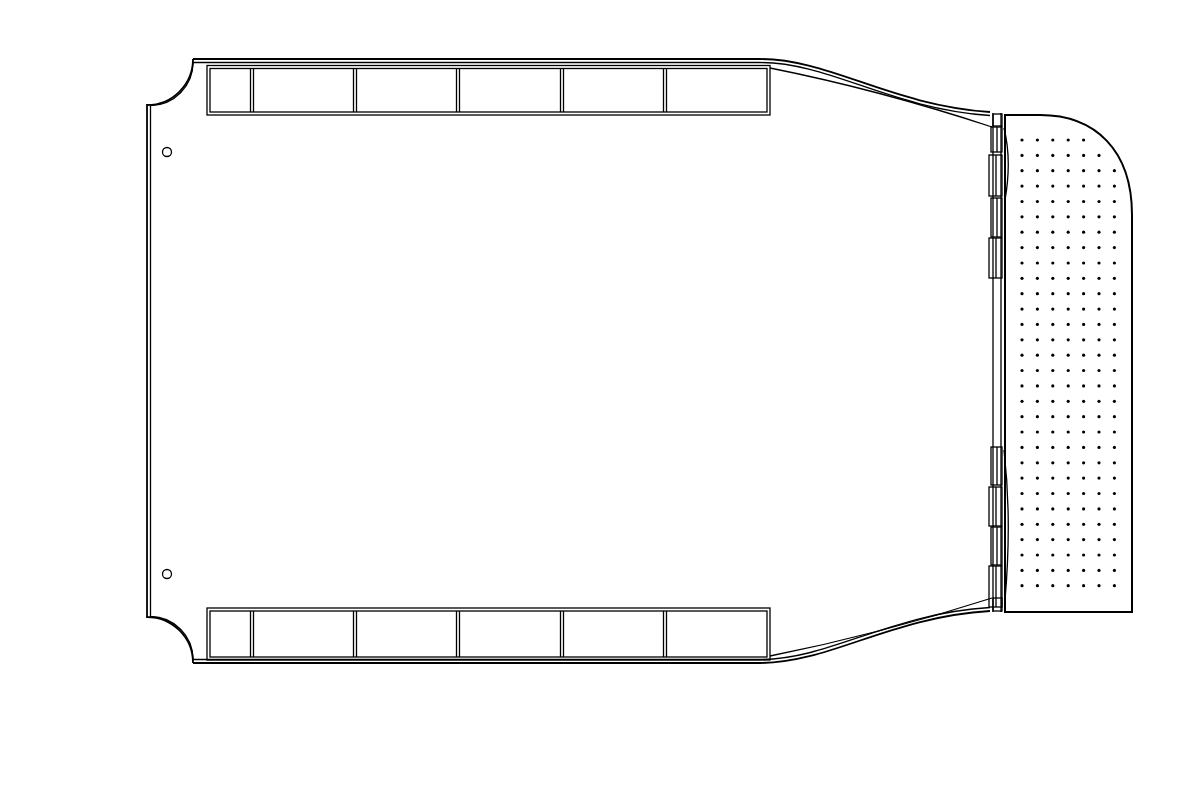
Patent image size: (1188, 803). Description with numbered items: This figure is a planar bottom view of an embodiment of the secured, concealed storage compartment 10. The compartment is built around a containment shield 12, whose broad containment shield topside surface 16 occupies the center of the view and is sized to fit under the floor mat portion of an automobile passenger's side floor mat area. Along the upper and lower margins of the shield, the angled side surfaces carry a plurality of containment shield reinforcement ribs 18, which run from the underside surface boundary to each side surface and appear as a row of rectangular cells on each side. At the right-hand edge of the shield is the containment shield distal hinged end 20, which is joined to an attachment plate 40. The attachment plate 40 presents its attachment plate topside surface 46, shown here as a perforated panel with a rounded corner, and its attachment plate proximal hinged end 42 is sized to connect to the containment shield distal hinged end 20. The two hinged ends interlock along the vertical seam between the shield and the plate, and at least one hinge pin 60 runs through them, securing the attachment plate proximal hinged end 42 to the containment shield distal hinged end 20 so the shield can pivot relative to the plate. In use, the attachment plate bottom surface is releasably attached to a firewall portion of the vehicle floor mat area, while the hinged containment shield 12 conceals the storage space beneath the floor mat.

The secured, concealed storage compartment 10 is at (1007, 57).
The containment shield 12 is at (851, 656).
The containment shield topside surface 16 is at (562, 378).
The containment shield reinforcement ribs 18 is at (520, 96).
The containment shield distal hinged end 20 is at (991, 139).
The attachment plate 40 is at (1054, 620).
The attachment plate proximal hinged end 42 is at (991, 179).
The attachment plate topside surface 46 is at (1113, 182).
The hinge pin 60 is at (996, 113).